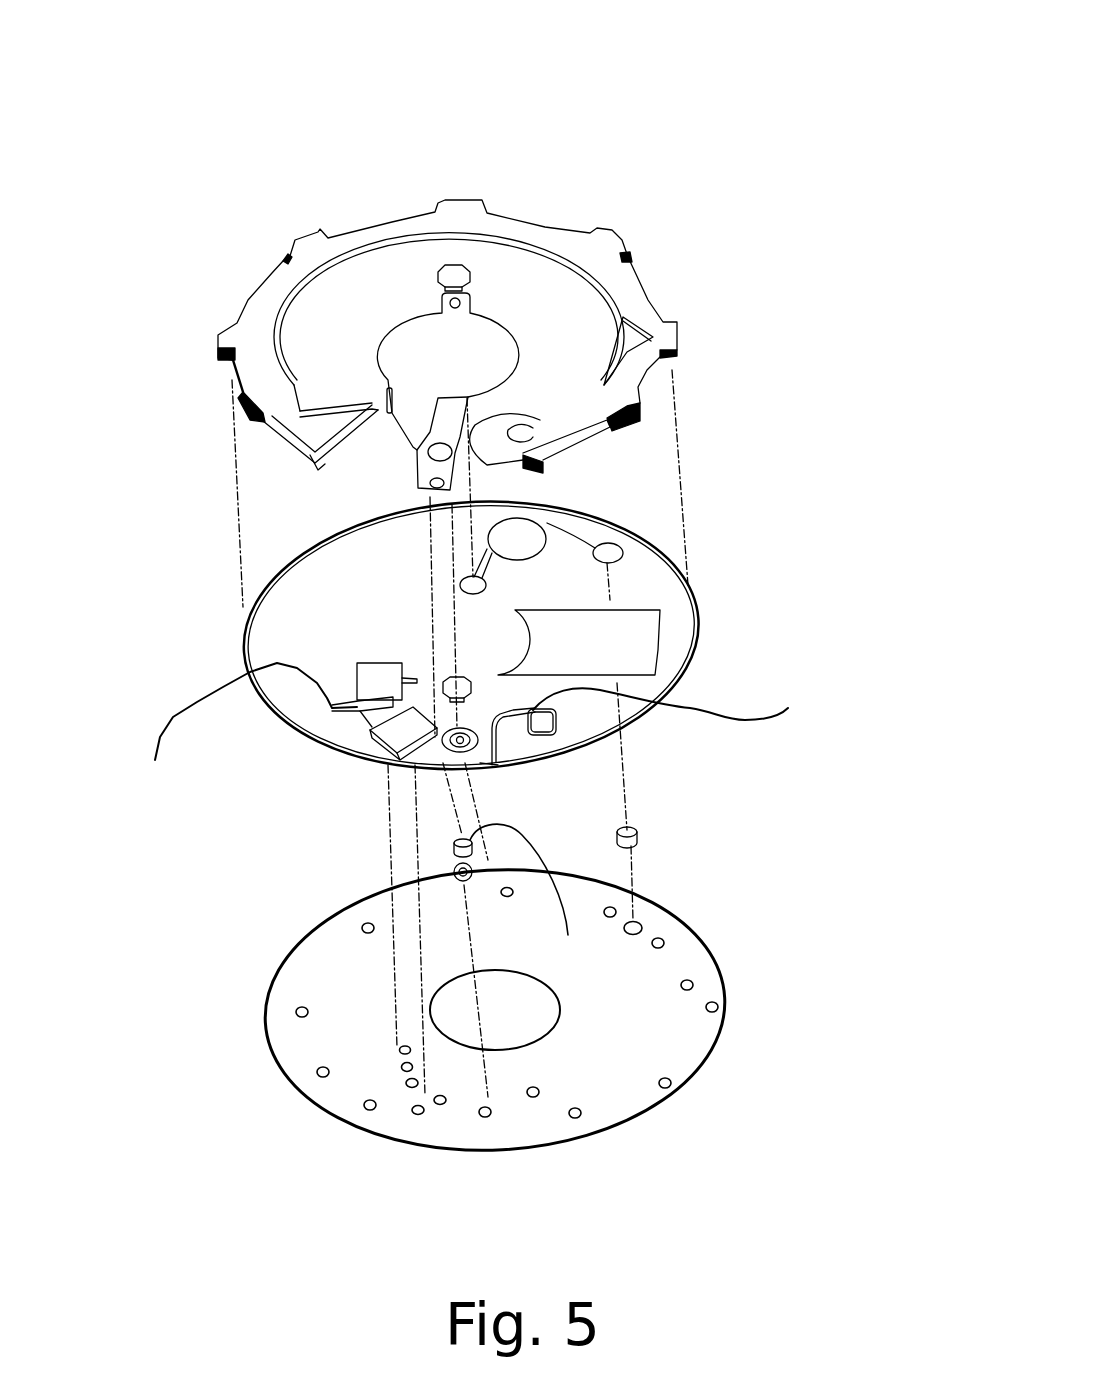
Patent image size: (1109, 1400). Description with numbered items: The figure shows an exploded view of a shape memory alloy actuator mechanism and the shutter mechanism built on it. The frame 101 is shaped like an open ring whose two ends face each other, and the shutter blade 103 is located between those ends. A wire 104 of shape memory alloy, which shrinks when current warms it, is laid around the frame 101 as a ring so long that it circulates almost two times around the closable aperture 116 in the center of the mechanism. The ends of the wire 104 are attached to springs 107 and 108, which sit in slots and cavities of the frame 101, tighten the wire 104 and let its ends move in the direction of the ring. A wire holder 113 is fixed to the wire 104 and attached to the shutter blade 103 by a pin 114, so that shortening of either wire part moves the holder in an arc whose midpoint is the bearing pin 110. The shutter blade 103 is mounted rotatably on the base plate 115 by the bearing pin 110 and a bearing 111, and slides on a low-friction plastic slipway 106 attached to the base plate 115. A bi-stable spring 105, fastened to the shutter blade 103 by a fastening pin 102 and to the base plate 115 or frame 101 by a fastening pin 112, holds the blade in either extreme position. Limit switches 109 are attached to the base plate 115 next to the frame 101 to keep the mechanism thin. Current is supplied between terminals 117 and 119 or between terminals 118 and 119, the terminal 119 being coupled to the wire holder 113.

The frame 101 is at (633, 248).
The fastening pin 102 is at (452, 262).
The shutter blade 103 is at (410, 313).
The wire 104 is at (690, 570).
The bi-stable spring 105 is at (627, 553).
The slipway 106 is at (660, 612).
The spring 107 is at (565, 735).
The spring 108 is at (355, 735).
The limit switches 109 is at (380, 729).
The bearing pin 110 is at (452, 677).
The bearing 111 is at (482, 773).
The fastening pin 112 is at (640, 849).
The wire holder 113 is at (453, 848).
The pin 114 is at (454, 873).
The base plate 115 is at (278, 968).
The aperture 116 is at (562, 1020).
The terminal 117 is at (195, 700).
The terminal 118 is at (718, 713).
The terminal 119 is at (537, 853).